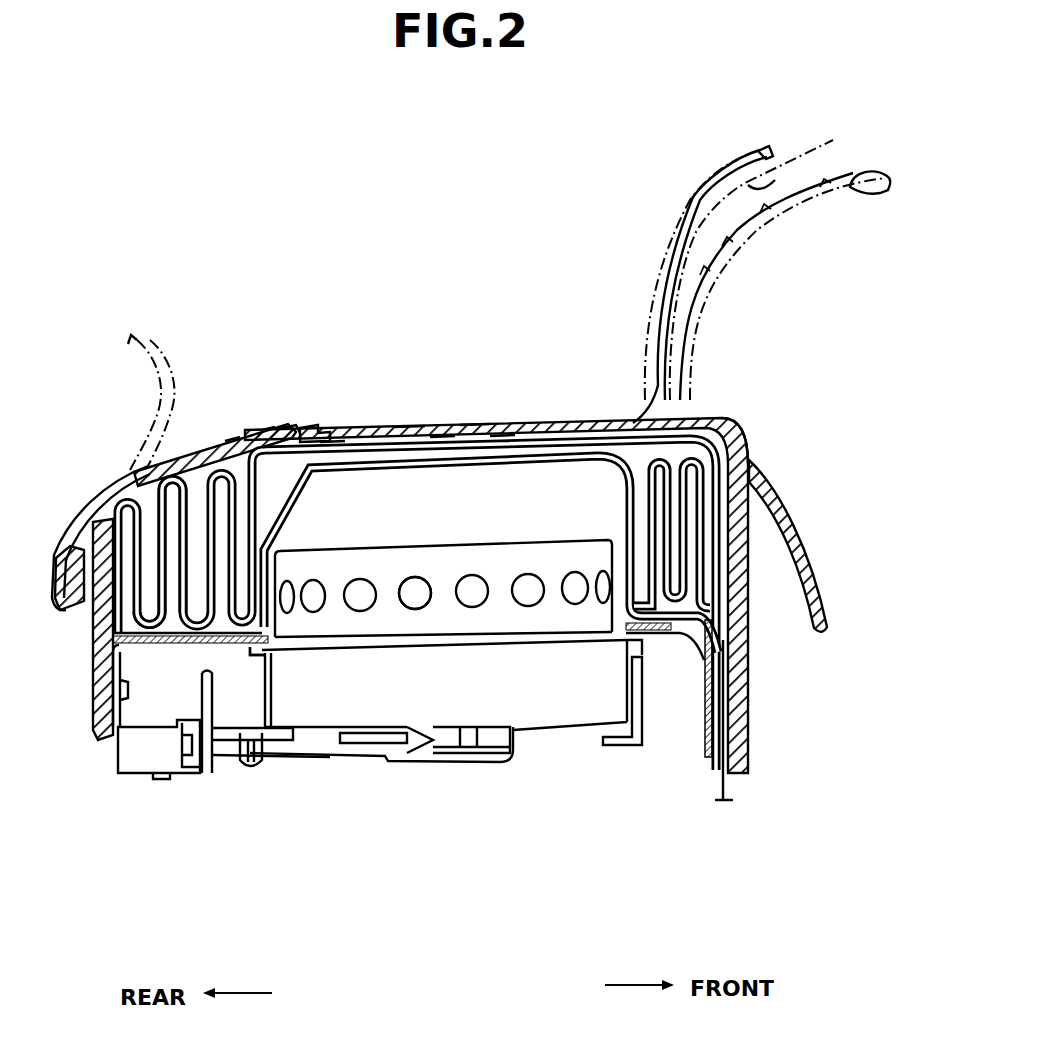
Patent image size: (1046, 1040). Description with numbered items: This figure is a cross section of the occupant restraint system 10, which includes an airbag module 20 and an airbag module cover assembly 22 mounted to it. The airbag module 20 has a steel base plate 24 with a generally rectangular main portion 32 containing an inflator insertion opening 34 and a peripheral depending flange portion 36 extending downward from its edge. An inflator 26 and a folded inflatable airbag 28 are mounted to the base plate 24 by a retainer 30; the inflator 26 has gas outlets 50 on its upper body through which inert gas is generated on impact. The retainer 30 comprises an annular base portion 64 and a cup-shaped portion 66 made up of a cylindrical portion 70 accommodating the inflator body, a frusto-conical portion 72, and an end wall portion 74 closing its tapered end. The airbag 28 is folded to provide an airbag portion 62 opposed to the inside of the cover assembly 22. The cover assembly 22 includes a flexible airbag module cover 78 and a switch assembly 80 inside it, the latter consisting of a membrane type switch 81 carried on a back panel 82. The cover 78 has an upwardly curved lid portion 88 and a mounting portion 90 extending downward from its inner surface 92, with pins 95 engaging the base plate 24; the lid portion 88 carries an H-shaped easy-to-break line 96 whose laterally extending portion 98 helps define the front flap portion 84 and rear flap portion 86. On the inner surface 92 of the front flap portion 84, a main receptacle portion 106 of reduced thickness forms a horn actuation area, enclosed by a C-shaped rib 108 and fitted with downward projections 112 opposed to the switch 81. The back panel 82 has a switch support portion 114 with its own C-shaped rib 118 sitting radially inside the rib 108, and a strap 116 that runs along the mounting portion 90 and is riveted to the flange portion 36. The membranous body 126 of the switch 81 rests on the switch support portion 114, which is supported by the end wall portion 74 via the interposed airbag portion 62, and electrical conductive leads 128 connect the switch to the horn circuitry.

The occupant restraint system 10 is at (235, 203).
The airbag module 20 is at (325, 768).
The airbag module cover assembly 22 is at (210, 290).
The base plate 24 is at (697, 653).
The inflator 26 is at (551, 730).
The folded inflatable airbag 28 is at (708, 543).
The retainer 30 is at (318, 478).
The main portion 32 is at (650, 634).
The inflator insertion opening 34 is at (302, 652).
The peripheral depending flange portion 36 is at (705, 750).
The gas outlets 50 is at (414, 609).
The airbag portion 62 is at (545, 445).
The annular base portion 64 is at (239, 634).
The cup-shaped portion 66 is at (290, 506).
The cylindrical portion 70 is at (277, 570).
The frusto-conical portion 72 is at (592, 500).
The end wall portion 74 is at (440, 464).
The flexible airbag module cover 78 is at (750, 462).
The switch assembly 80 is at (701, 203).
The membrane type switch 81 is at (805, 165).
The back panel 82 is at (745, 163).
The front flap portion 84 is at (795, 222).
The rear flap portion 86 is at (150, 388).
The lid portion 88 is at (205, 445).
The mounting portion 90 is at (755, 668).
The inner surface 92 is at (232, 438).
The pins 95 is at (100, 700).
The easy-to-break line 96 is at (268, 440).
The laterally extending portion 98 is at (290, 432).
The main receptacle portion 106 is at (410, 433).
The C-shaped rib 108 is at (318, 430).
The projections 112 is at (470, 434).
The switch support portion 114 is at (502, 437).
The strap 116 is at (728, 593).
The C-shaped rib 118 is at (332, 441).
The membranous body 126 is at (442, 437).
The electrical conductive leads 128 is at (738, 795).